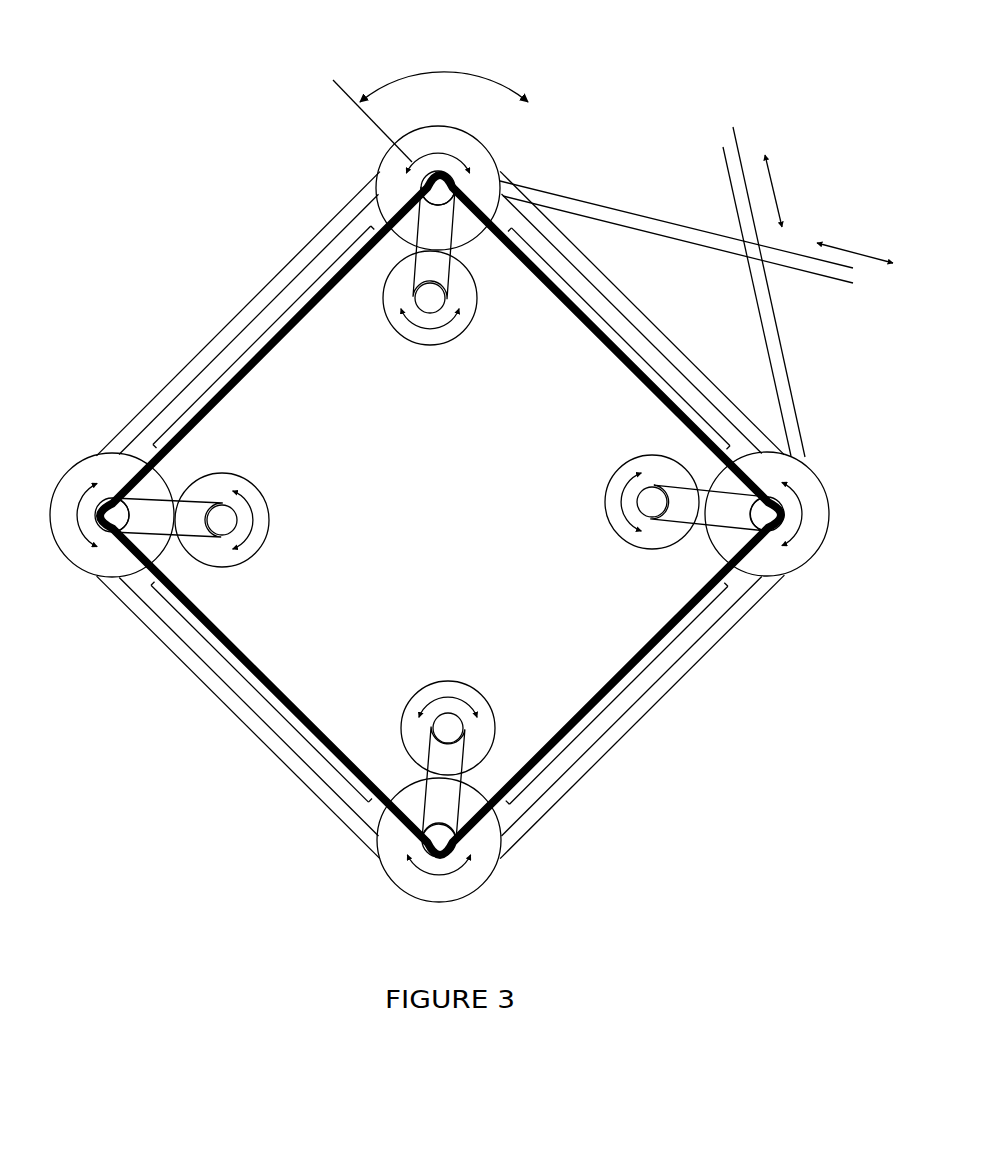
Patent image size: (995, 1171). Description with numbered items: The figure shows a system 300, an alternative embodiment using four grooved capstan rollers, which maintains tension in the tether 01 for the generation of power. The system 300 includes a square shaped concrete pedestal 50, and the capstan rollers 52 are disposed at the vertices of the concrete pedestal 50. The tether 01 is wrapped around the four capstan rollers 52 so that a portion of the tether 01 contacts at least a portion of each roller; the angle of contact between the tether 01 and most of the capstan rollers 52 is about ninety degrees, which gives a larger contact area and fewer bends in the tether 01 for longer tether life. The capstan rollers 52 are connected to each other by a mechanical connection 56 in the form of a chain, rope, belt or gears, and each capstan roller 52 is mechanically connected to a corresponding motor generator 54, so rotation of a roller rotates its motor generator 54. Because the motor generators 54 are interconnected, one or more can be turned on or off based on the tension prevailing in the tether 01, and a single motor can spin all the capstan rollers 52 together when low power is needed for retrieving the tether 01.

The system 300 is at (232, 72).
The concrete pedestal 50 is at (480, 553).
The capstan rollers 52 is at (479, 167).
The motor generator 54 is at (404, 327).
The mechanical connection 56 is at (598, 706).
The tether 01 is at (740, 162).